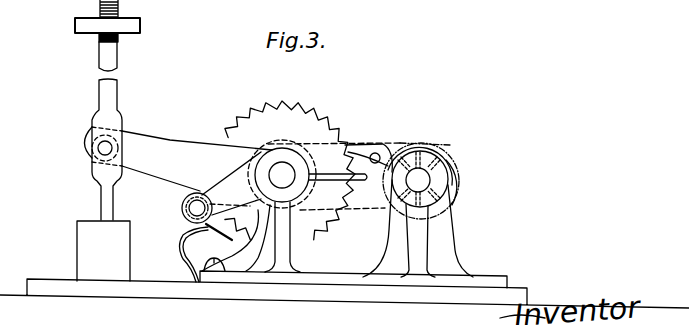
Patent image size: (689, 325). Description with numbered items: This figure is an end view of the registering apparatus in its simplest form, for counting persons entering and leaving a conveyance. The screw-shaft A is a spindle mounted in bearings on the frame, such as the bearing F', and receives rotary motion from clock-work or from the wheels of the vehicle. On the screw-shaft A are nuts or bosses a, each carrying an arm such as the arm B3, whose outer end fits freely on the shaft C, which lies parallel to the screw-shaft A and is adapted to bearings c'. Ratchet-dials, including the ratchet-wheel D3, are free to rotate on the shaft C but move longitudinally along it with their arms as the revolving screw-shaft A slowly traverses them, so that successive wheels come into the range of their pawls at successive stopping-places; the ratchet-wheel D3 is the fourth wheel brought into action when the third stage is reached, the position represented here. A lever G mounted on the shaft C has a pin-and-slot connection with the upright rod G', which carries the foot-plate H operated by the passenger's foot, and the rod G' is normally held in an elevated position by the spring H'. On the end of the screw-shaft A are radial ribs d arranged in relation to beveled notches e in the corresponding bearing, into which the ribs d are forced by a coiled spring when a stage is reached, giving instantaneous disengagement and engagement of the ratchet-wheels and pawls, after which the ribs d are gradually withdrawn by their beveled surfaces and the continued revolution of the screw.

The foot-plate H is at (107, 35).
The upright rod G' is at (109, 143).
The spring H' is at (103, 251).
The lever G is at (197, 161).
The ratchet-wheel D3 is at (290, 170).
The shaft C is at (301, 206).
The bearing F' is at (203, 237).
The bearing c' is at (240, 228).
The arm B3 is at (368, 177).
The screw-shaft A is at (418, 212).
The nut a is at (425, 142).
The radial rib d is at (412, 220).
The beveled notch e is at (459, 212).